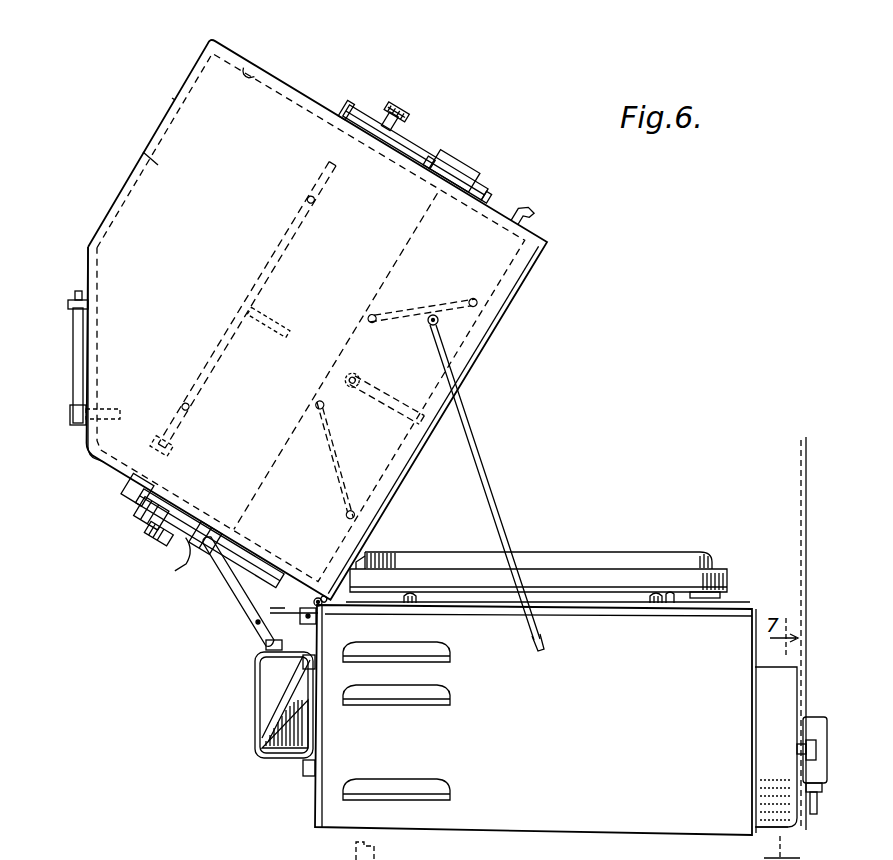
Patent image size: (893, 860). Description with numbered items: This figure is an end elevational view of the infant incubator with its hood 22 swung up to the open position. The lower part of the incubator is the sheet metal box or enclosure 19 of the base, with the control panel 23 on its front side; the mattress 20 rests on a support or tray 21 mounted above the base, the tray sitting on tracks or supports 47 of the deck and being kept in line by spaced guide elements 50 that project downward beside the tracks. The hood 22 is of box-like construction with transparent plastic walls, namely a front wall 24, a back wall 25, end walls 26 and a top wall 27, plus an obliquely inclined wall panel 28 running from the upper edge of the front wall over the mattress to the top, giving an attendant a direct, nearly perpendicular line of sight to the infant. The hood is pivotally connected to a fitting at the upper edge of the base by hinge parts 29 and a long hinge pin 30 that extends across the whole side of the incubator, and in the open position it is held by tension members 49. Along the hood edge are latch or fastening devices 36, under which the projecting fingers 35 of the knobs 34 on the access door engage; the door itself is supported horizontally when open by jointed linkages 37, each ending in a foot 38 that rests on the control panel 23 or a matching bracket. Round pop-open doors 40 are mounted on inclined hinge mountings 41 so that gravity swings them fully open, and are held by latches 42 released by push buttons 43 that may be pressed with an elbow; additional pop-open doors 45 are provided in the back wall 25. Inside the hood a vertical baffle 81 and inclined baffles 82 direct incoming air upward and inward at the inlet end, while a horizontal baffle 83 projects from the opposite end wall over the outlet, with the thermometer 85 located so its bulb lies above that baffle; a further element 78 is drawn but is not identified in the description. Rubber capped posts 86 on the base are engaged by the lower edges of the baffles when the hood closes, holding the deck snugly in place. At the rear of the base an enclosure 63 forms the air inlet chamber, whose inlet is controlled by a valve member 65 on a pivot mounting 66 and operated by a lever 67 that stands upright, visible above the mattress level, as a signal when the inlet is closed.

The box or enclosure for the base 19 is at (547, 830).
The mattress 20 is at (586, 566).
The support or tray 21 is at (722, 580).
The hood 22 is at (311, 91).
The control panel 23 is at (262, 682).
The front wall 24 is at (92, 460).
The back wall 25 is at (250, 72).
The end walls 26 is at (158, 165).
The top wall 27 is at (172, 98).
The inclined wall panel 28 is at (87, 265).
The hinge parts 29 is at (314, 592).
The hinge pin 30 is at (322, 606).
The knobs 34 is at (138, 512).
The projecting fingers 35 is at (168, 452).
The latch or fastening devices 36 is at (125, 488).
The jointed linkages 37 is at (242, 598).
The foot 38 is at (266, 642).
The pop-open doors 40 is at (182, 540).
The hinge mounting 41 is at (440, 160).
The latches 42 is at (394, 116).
The push buttons 43 is at (412, 120).
The pop-open doors 45 is at (356, 108).
The tracks or supports 47 is at (684, 606).
The tension members 49 is at (480, 446).
The guide elements 50 is at (714, 597).
The enclosure 63 is at (765, 826).
The valve member 65 is at (808, 716).
The pivot mounting 66 is at (797, 704).
The lever 67 is at (804, 497).
The pivot 78 is at (390, 400).
The baffle 81 is at (350, 340).
The baffles 82 is at (420, 310).
The horizontal baffle 83 is at (292, 236).
The thermometer 85 is at (73, 372).
The posts 86 is at (420, 600).